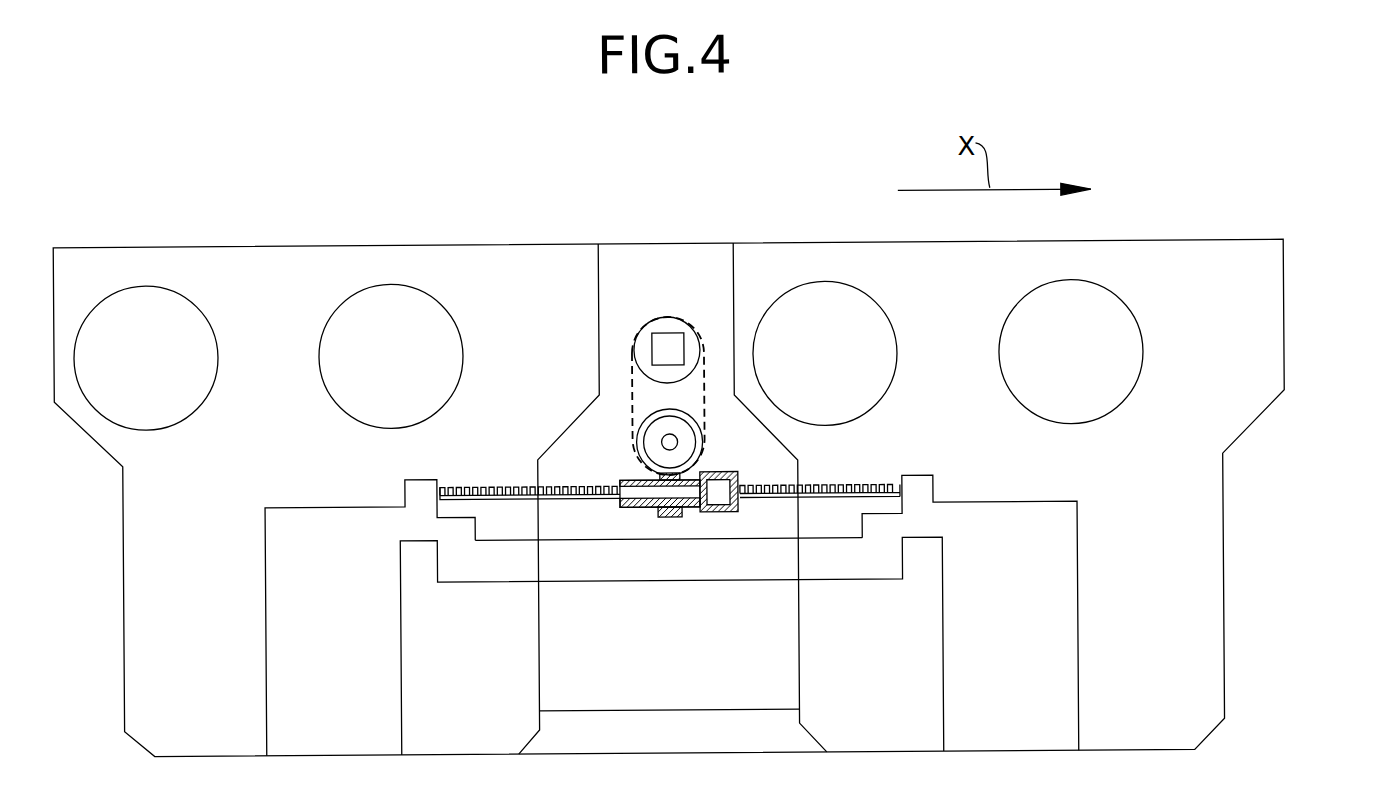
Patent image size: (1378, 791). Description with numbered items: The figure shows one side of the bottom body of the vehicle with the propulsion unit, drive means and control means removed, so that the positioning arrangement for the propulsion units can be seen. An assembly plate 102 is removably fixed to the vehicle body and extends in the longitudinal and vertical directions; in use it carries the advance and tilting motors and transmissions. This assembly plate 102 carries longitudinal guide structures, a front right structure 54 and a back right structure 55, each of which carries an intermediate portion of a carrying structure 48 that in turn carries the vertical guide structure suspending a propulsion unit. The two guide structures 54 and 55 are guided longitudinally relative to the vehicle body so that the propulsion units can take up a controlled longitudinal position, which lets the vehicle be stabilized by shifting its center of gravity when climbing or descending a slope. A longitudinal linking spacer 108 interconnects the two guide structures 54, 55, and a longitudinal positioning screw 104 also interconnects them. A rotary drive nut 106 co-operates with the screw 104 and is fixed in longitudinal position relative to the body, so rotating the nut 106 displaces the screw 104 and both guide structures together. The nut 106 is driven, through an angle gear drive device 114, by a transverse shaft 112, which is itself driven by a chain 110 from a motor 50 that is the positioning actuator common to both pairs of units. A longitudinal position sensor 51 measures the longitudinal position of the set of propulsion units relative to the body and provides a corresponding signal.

The carrying structure 48 is at (1083, 559).
The motor 50 is at (647, 316).
The longitudinal position sensor 51 is at (673, 338).
The longitudinal guide structure 54 is at (1080, 631).
The longitudinal guide structure 55 is at (275, 589).
The assembly plate 102 is at (1288, 318).
The longitudinal positioning screw 104 is at (858, 485).
The rotary drive nut 106 is at (717, 487).
The longitudinal linking spacer 108 is at (717, 562).
The chain 110 is at (632, 398).
The transverse shaft 112 is at (650, 448).
The angle gear drive device 114 is at (667, 515).